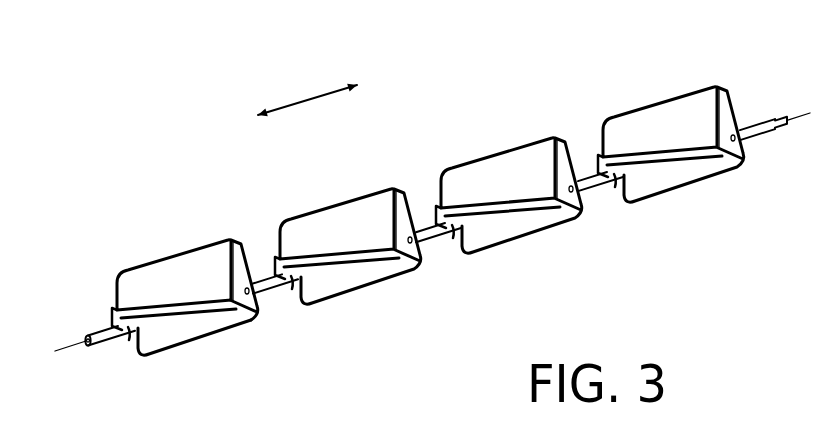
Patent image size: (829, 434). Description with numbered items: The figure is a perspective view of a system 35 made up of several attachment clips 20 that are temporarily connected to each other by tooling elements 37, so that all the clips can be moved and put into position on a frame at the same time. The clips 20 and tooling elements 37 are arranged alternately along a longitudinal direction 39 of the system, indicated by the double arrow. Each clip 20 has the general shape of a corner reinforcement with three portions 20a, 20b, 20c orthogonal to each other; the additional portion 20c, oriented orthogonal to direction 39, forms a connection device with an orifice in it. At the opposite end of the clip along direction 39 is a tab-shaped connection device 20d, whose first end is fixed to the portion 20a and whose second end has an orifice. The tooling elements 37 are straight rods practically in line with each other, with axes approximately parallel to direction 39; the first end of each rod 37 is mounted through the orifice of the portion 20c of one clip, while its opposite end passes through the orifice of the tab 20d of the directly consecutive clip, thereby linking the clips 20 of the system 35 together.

The attachment clip 20 is at (382, 219).
The portion of the clip 20a is at (142, 280).
The portion of the clip 20b is at (192, 333).
The additional portion 20c is at (262, 305).
The tab-shaped connection device 20d is at (112, 312).
The system 35 is at (172, 236).
The tooling element 37 is at (275, 292).
The longitudinal direction 39 is at (306, 97).